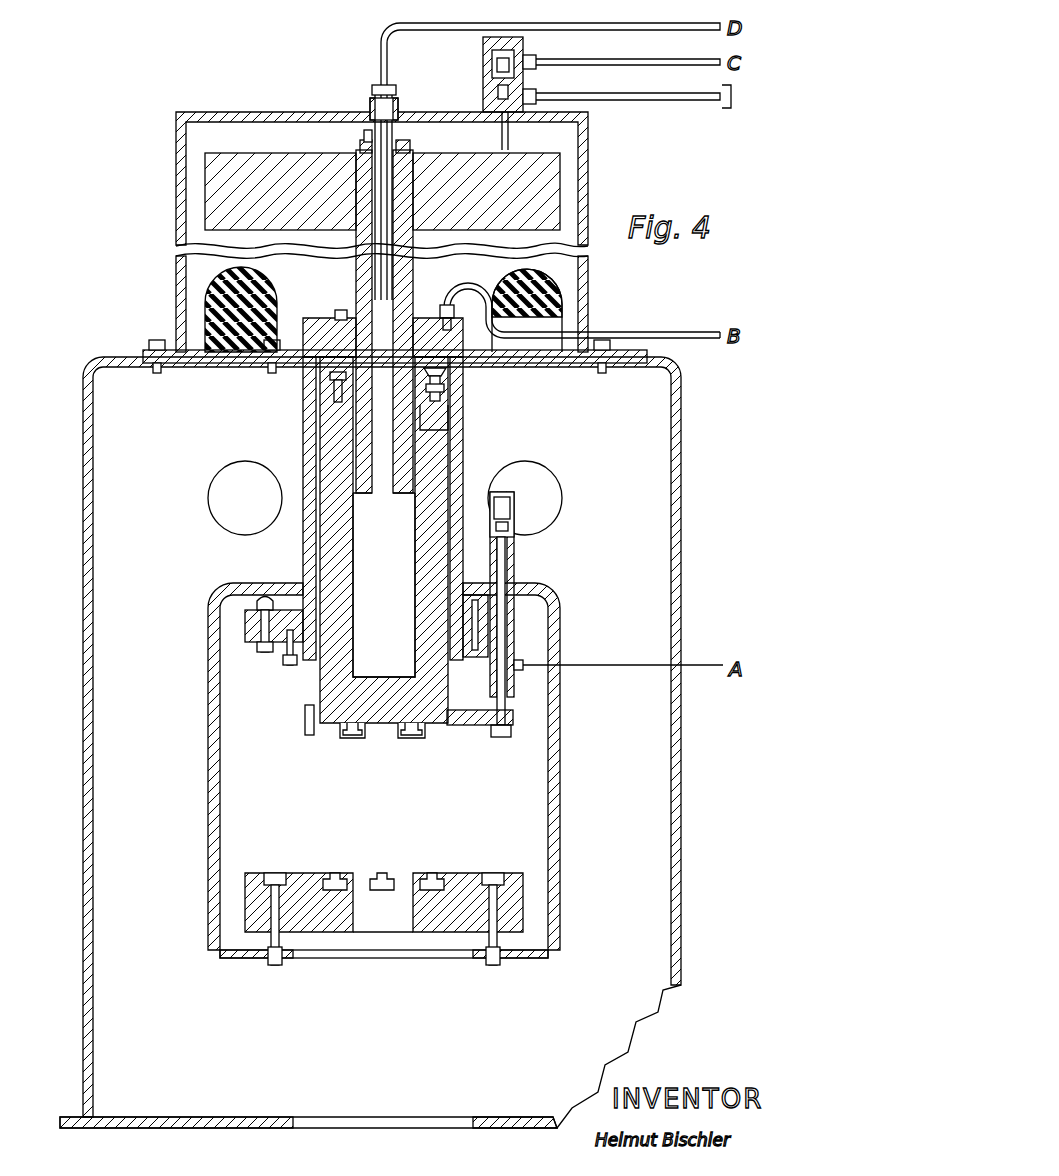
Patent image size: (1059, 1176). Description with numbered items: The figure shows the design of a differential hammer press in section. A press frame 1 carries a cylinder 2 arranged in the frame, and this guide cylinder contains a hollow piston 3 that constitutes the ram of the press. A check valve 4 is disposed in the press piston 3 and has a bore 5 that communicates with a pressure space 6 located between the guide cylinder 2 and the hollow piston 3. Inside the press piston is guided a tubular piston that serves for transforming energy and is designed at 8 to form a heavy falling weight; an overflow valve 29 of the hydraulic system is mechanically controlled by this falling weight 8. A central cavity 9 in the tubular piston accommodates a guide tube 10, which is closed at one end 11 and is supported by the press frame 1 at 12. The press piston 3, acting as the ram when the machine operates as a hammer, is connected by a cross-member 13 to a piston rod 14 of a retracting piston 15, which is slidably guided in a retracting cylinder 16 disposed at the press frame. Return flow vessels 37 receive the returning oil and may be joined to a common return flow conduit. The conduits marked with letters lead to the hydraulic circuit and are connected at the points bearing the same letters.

The press frame 1 is at (83, 766).
The cylinder 2 is at (303, 410).
The hollow piston 3 is at (385, 723).
The check valve 4 is at (444, 395).
The bore 5 is at (434, 424).
The pressure space 6 is at (447, 371).
The falling weight 8 is at (289, 166).
The central cavity 9 is at (383, 493).
The guide tube 10 is at (370, 130).
The closed end of guide tube 11 is at (394, 93).
The support point of guide tube 12 is at (372, 105).
The cross-member 13 is at (478, 725).
The piston rod 14 is at (504, 690).
The retracting piston 15 is at (514, 540).
The retracting cylinder 16 is at (514, 572).
The overflow valve 29 is at (523, 80).
The return flow vessels 37 is at (731, 108).